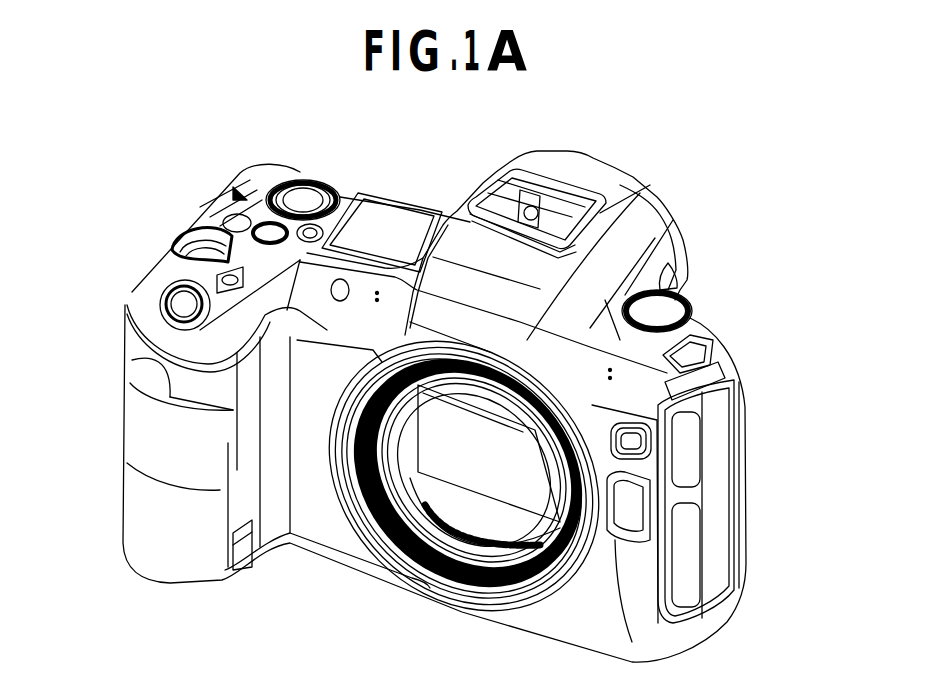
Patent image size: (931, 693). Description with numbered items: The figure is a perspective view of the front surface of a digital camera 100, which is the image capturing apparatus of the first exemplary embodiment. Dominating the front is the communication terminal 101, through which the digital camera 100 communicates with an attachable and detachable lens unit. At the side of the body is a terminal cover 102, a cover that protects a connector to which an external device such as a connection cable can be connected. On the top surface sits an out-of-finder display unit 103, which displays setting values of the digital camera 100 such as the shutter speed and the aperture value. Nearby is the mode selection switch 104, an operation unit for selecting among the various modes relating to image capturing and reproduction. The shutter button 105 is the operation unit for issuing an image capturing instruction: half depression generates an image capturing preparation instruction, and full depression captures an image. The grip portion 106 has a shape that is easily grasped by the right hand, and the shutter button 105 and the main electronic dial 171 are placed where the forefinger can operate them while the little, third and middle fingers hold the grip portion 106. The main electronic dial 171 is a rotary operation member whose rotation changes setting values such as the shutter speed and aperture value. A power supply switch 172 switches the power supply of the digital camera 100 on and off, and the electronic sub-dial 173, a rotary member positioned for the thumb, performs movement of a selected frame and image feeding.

The digital camera 100 is at (724, 200).
The communication terminal 101 is at (423, 533).
The terminal cover 102 is at (687, 560).
The out-of-finder display unit 103 is at (400, 225).
The mode selection switch 104 is at (304, 197).
The shutter button 105 is at (178, 300).
The grip portion 106 is at (138, 445).
The main electronic dial 171 is at (180, 233).
The power supply switch 172 is at (675, 305).
The electronic sub-dial 173 is at (290, 193).